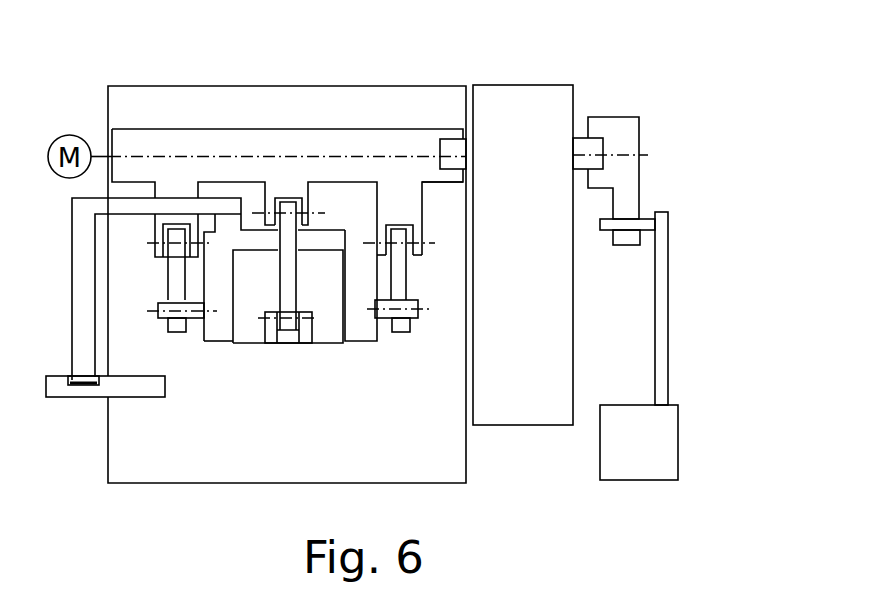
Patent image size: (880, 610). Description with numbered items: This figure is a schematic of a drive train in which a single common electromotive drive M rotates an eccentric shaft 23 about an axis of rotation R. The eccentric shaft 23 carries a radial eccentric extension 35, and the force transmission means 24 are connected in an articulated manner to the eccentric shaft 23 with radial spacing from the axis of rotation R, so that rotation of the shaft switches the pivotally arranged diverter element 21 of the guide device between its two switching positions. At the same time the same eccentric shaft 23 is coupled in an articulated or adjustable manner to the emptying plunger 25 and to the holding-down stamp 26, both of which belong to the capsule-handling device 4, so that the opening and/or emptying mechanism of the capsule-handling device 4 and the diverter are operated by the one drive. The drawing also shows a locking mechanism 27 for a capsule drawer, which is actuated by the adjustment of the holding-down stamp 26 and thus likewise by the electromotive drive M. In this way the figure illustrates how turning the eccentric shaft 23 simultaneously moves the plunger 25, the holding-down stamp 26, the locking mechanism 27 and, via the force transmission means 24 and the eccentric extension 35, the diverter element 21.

The eccentric shaft 23 is at (322, 137).
The force transmission means 24 is at (220, 320).
The plunger 25 is at (327, 320).
The capsule-handling device 4 is at (370, 368).
The locking mechanism 27 is at (82, 400).
The axis of rotation R is at (647, 153).
The radial eccentric extension 35 is at (628, 201).
The holding-down stamp 26 is at (662, 303).
The diverter element 21 is at (662, 438).